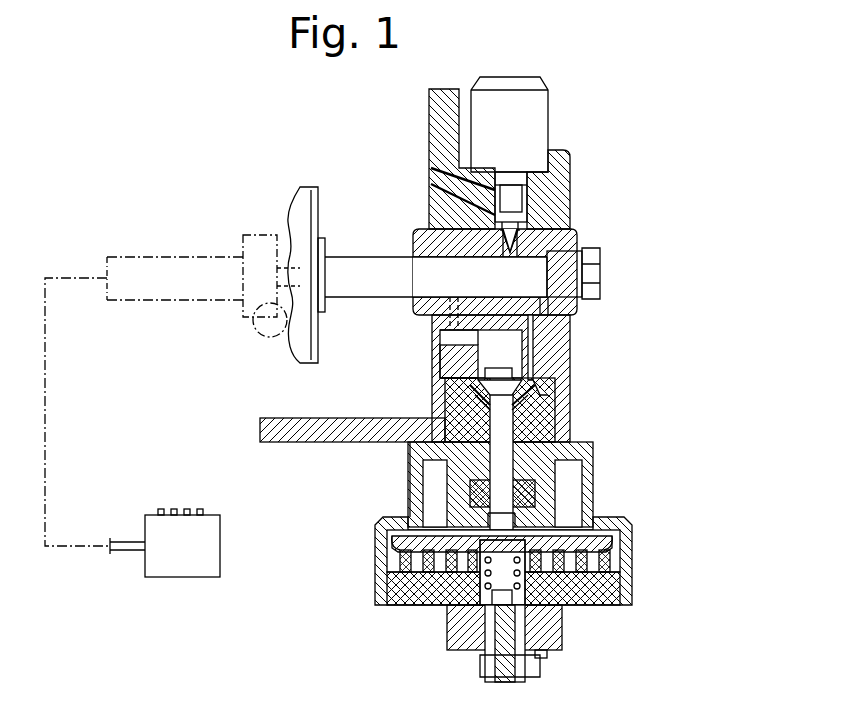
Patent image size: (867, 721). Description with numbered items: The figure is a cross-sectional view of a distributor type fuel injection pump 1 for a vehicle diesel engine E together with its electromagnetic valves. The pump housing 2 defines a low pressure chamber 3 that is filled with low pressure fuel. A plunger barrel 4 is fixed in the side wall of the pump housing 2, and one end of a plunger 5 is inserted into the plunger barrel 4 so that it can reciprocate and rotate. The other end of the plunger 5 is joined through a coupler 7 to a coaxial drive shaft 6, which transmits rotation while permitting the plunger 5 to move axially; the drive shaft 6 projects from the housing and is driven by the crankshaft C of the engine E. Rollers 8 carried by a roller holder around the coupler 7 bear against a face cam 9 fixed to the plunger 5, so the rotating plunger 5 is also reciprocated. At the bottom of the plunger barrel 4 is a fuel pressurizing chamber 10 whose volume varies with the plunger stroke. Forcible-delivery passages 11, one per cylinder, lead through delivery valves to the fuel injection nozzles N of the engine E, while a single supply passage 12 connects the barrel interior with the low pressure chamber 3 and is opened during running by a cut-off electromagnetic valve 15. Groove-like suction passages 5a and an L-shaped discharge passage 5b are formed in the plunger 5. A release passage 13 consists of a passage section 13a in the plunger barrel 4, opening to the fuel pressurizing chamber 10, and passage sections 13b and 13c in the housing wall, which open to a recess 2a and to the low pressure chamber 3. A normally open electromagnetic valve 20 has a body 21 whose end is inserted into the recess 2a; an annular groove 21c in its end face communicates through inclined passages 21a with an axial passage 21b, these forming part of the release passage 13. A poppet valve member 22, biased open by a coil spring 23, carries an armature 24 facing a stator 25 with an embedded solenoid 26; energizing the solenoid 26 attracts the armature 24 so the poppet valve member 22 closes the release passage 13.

The fuel injection pump 1 is at (572, 140).
The pump housing 2 is at (310, 430).
The recess 2a is at (412, 446).
The low pressure chamber 3 is at (335, 391).
The plunger barrel 4 is at (576, 234).
The plunger 5 is at (350, 297).
The suction passages 5a is at (535, 235).
The discharge passage 5b is at (445, 255).
The drive shaft 6 is at (190, 257).
The coupler 7 is at (265, 235).
The rollers 8 is at (262, 334).
The face cam 9 is at (302, 188).
The fuel pressurizing chamber 10 is at (555, 262).
The forcible-delivery passages 11 is at (420, 314).
The supply passage 12 is at (440, 170).
The release passage 13 is at (538, 334).
The passage section 13a is at (566, 304).
The passage section 13b is at (562, 352).
The passage section 13c is at (437, 340).
The cut-off electromagnetic valve 15 is at (540, 105).
The electromagnetic valve 20 is at (535, 590).
The body 21 is at (585, 450).
The inclined passages 21a is at (550, 398).
The passage 21b is at (550, 412).
The annular groove 21c is at (560, 378).
The poppet valve member 22 is at (513, 430).
The coil spring 23 is at (487, 587).
The armature 24 is at (605, 528).
The stator 25 is at (387, 597).
The solenoid 26 is at (400, 557).
The fuel injection nozzles N is at (161, 512).
The crankshaft C is at (130, 552).
The engine E is at (175, 578).